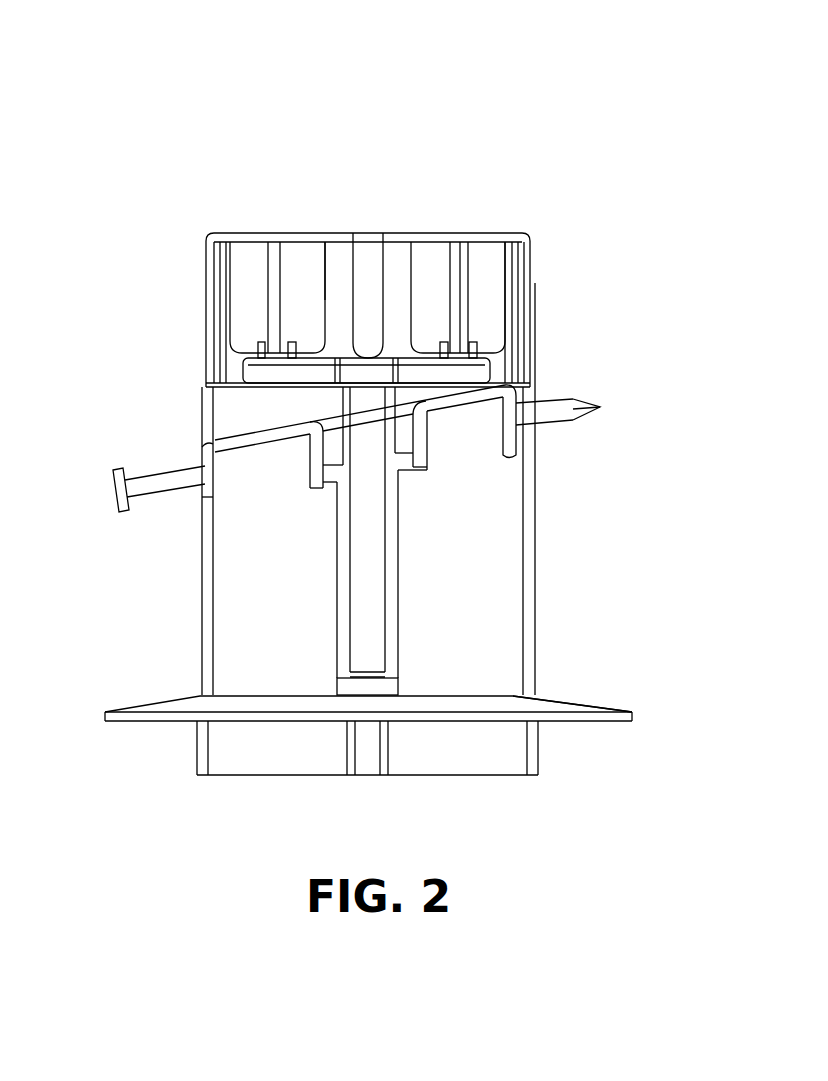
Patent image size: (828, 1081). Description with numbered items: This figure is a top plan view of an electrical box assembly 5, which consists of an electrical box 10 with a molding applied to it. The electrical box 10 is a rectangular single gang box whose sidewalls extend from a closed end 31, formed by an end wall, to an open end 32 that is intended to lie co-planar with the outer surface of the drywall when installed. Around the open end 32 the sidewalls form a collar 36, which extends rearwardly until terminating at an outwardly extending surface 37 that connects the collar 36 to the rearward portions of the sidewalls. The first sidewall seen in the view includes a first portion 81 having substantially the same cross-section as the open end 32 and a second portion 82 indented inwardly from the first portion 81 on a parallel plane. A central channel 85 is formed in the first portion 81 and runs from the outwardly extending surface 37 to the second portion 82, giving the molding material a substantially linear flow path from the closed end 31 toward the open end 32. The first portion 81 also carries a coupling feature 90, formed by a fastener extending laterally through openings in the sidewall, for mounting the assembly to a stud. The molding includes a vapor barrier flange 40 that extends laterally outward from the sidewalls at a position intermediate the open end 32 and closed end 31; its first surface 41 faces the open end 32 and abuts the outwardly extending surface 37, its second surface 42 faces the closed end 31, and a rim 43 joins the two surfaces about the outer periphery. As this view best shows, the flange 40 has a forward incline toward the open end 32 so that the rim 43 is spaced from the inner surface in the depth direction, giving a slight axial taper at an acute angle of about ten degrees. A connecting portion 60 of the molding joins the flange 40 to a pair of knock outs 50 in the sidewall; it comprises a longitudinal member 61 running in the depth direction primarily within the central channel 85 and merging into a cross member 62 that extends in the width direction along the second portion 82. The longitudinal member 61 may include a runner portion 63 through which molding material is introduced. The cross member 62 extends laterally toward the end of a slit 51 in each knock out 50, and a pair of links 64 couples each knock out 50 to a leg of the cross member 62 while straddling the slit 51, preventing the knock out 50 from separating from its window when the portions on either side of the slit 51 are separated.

The electrical box assembly 5 is at (138, 82).
The electrical box 10 is at (536, 559).
The closed end 31 is at (379, 256).
The open end 32 is at (248, 776).
The collar 36 is at (540, 745).
The outwardly extending surface 37 is at (508, 722).
The vapor barrier flange 40 is at (634, 717).
The first surface 41 is at (152, 727).
The second surface 42 is at (158, 703).
The rim 43 is at (105, 717).
The knock out 50 is at (250, 255).
The slit 51 is at (278, 257).
The connecting portion 60 is at (370, 422).
The longitudinal member 61 is at (373, 507).
The cross member 62 is at (240, 368).
The runner portion 63 is at (367, 255).
The links 64 is at (290, 342).
The first portion 81 is at (229, 581).
The second portion 82 is at (340, 259).
The central channel 85 is at (382, 592).
The coupling feature 90 is at (160, 474).